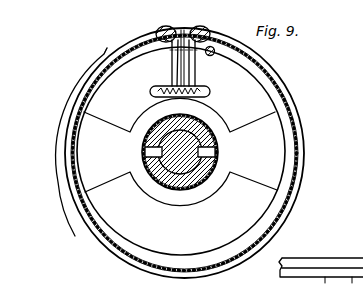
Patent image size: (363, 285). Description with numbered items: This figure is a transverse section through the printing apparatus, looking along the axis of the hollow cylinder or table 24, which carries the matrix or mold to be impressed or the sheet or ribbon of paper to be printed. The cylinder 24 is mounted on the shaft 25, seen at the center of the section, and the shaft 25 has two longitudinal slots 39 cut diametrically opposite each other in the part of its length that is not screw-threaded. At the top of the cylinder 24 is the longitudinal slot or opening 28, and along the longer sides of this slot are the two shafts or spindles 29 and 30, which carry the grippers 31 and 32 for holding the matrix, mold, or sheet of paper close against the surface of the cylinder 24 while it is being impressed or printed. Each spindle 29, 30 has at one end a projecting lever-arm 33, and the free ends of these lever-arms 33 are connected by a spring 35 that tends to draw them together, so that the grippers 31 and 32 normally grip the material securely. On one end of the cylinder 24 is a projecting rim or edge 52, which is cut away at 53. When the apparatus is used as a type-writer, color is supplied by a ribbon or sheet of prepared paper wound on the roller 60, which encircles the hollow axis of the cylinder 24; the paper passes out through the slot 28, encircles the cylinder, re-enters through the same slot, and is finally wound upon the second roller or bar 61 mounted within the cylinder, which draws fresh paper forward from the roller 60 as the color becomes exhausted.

The hollow cylinder or table 24 is at (297, 155).
The shaft 25 is at (186, 148).
The longitudinal slot or opening 28 is at (183, 38).
The shaft or spindle 29 is at (154, 42).
The shaft or spindle 30 is at (220, 38).
The gripper 31 is at (202, 29).
The gripper 32 is at (163, 29).
The lever-arm 33 is at (175, 62).
The spring 35 is at (203, 95).
The longitudinal slots 39 is at (208, 152).
The projecting rim or edge 52 is at (289, 208).
The cut-away portion 53 is at (75, 142).
The roller 60 is at (146, 152).
The second roller or bar 61 is at (213, 55).